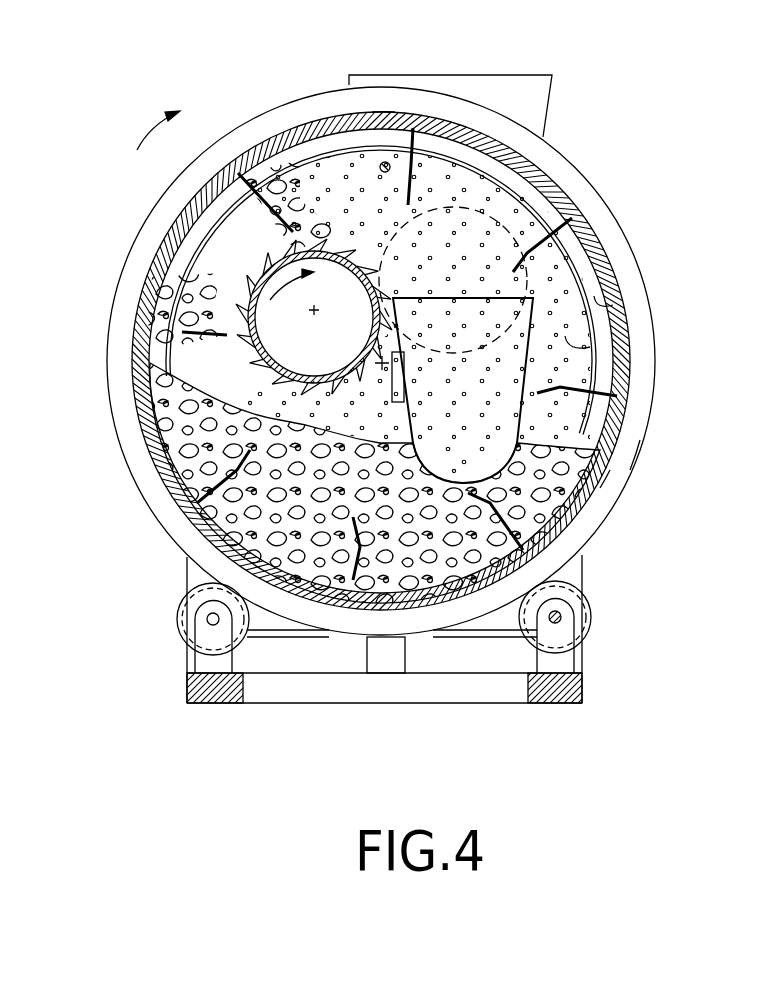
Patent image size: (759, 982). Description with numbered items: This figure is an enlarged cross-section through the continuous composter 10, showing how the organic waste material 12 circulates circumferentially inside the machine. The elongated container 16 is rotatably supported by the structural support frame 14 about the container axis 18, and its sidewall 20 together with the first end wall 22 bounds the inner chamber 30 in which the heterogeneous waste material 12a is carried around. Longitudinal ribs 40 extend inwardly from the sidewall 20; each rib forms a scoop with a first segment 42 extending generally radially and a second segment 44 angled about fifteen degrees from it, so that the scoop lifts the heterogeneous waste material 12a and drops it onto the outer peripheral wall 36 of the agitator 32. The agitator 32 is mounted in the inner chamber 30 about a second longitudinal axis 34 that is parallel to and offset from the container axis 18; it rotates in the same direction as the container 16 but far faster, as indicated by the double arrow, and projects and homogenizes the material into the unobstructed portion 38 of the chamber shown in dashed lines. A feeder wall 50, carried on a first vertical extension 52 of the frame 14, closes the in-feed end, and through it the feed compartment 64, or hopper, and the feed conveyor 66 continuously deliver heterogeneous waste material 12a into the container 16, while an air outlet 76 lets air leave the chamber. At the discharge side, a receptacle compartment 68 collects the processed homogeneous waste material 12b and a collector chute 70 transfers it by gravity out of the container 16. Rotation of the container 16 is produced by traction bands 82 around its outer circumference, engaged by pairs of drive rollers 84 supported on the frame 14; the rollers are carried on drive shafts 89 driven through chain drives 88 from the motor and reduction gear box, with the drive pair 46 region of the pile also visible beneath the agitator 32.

The continuous composter 10 is at (668, 135).
The organic waste material 12 is at (592, 420).
The heterogeneous waste material 12a is at (600, 488).
The homogeneous waste material 12b is at (440, 238).
The structural support frame 14 is at (437, 692).
The container 16 is at (233, 123).
The container axis 18 is at (380, 368).
The sidewall 20 is at (533, 312).
The first end wall 22 is at (615, 298).
The inner chamber 30 is at (537, 442).
The agitator 32 is at (245, 276).
The second longitudinal axis 34 is at (287, 353).
The outer peripheral wall 36 is at (182, 332).
The unobstructed portion 38 is at (520, 210).
The longitudinal ribs 40 is at (383, 128).
The first segment 42 is at (293, 232).
The second segment 44 is at (250, 268).
The coarse material pile 46 is at (267, 397).
The feeder wall 50 is at (590, 352).
The first vertical extension 52 is at (187, 573).
The feed compartment 64 is at (550, 103).
The feed conveyor 66 is at (395, 402).
The receptacle compartment 68 is at (596, 297).
The collector chute 70 is at (555, 508).
The air outlet 76 is at (380, 160).
The traction bands 82 is at (645, 447).
The drive rollers 84 is at (182, 618).
The chain drives 88 is at (495, 635).
The drive shafts 89 is at (211, 626).